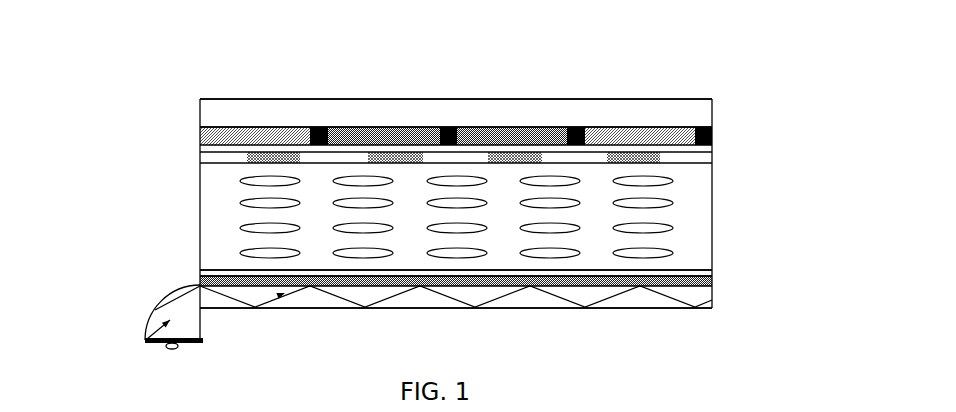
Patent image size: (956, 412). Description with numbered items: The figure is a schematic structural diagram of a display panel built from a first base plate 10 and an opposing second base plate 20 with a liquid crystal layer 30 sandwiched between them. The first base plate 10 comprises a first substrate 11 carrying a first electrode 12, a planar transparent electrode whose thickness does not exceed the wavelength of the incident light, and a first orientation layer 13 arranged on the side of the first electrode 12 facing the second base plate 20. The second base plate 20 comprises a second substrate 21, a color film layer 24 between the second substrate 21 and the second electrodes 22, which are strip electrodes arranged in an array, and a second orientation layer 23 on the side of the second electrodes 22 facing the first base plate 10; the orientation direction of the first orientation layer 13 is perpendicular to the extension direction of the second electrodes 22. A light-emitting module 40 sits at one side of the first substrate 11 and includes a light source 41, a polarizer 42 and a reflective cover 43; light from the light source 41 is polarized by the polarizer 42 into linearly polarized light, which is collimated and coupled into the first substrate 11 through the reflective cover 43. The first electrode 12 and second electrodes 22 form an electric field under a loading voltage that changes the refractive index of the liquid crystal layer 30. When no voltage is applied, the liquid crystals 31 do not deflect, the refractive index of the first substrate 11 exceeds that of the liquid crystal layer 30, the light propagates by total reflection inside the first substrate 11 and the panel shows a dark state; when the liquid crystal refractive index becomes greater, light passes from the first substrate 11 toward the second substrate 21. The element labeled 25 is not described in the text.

The first base plate 10 is at (509, 303).
The first substrate 11 is at (483, 318).
The first electrode 12 is at (712, 283).
The first orientation layer 13 is at (712, 273).
The second base plate 20 is at (521, 88).
The second substrate 21 is at (682, 115).
The second electrode 22 is at (520, 150).
The second orientation layer 23 is at (690, 157).
The color film layer 24 is at (708, 134).
The thin film transistor layer 25 is at (590, 148).
The liquid crystal layer 30 is at (461, 216).
The liquid crystals 31 is at (653, 205).
The light-emitting module 40 is at (115, 330).
The light source 41 is at (175, 347).
The polarizer 42 is at (145, 340).
The reflective cover 43 is at (153, 315).